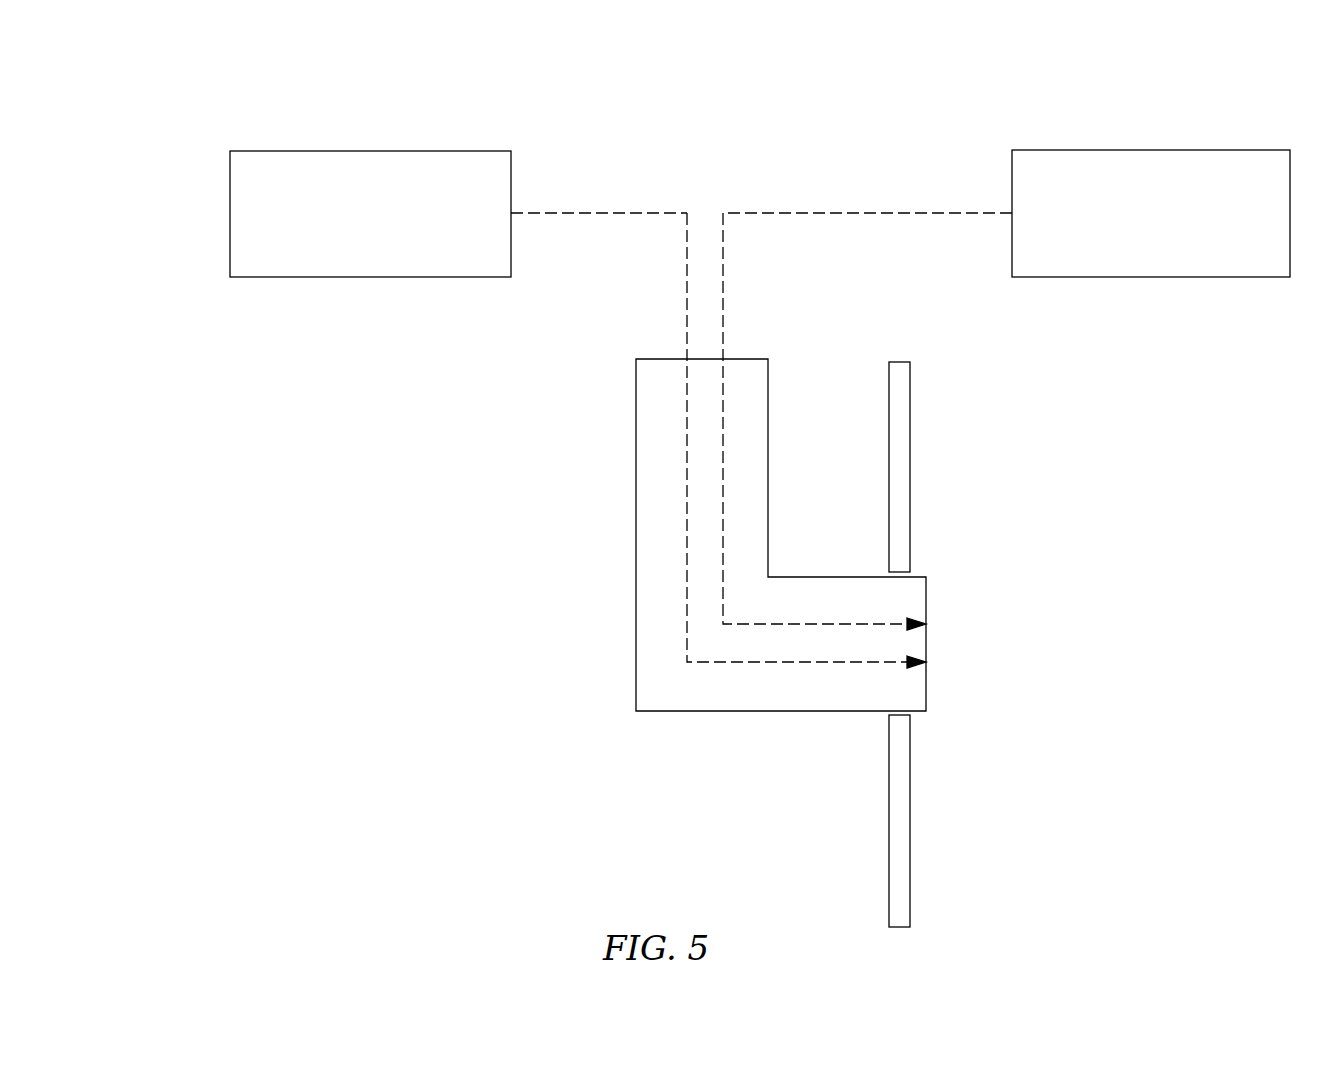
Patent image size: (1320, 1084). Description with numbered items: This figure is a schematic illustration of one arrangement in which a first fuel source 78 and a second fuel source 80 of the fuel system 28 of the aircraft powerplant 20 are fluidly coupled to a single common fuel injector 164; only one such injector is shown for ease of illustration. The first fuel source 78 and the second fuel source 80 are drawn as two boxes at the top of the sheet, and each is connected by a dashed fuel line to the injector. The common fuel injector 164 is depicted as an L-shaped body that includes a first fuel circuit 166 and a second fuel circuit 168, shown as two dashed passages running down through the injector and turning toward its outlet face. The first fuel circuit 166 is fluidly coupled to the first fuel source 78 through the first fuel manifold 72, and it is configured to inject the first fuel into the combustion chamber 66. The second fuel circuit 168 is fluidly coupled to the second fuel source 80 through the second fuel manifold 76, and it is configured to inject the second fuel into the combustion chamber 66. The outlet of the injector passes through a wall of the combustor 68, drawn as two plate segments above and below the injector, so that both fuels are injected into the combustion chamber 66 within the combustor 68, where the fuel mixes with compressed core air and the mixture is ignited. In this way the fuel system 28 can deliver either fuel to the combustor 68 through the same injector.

The aircraft powerplant 20 is at (176, 128).
The fuel system 28 is at (1207, 119).
The combustion chamber 66 is at (1147, 541).
The combustor 68 is at (874, 386).
The first fuel manifold 72 is at (596, 213).
The second fuel manifold 76 is at (833, 213).
The first fuel source 78 is at (380, 243).
The second fuel source 80 is at (1135, 243).
The common fuel injector 164 is at (945, 601).
The first fuel circuit 166 is at (687, 538).
The second fuel circuit 168 is at (723, 538).